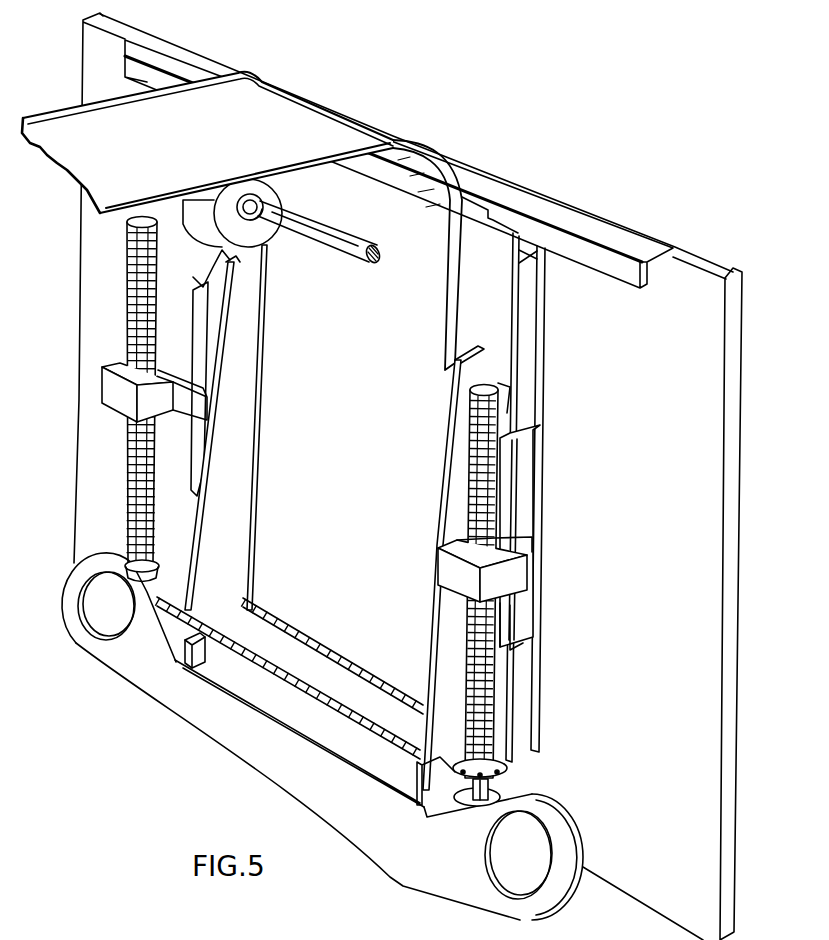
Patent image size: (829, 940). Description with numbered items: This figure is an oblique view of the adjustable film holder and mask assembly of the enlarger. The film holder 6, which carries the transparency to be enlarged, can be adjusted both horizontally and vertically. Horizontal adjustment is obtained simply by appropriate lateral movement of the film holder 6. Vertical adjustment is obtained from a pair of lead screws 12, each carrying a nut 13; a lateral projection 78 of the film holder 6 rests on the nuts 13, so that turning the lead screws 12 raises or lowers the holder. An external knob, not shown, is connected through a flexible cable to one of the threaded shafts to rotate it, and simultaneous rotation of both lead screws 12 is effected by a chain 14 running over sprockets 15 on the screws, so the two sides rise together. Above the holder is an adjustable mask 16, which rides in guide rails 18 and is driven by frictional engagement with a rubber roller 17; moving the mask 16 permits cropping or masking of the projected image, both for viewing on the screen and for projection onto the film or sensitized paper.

The film holder 6 is at (527, 455).
The lead screws 12 is at (126, 432).
The nuts 13 is at (115, 387).
The chain 14 is at (363, 727).
The sprockets 15 is at (125, 553).
The adjustable mask 16 is at (418, 199).
The rubber roller 17 is at (268, 200).
The guide rails 18 is at (215, 73).
The lateral projection 78 is at (170, 370).